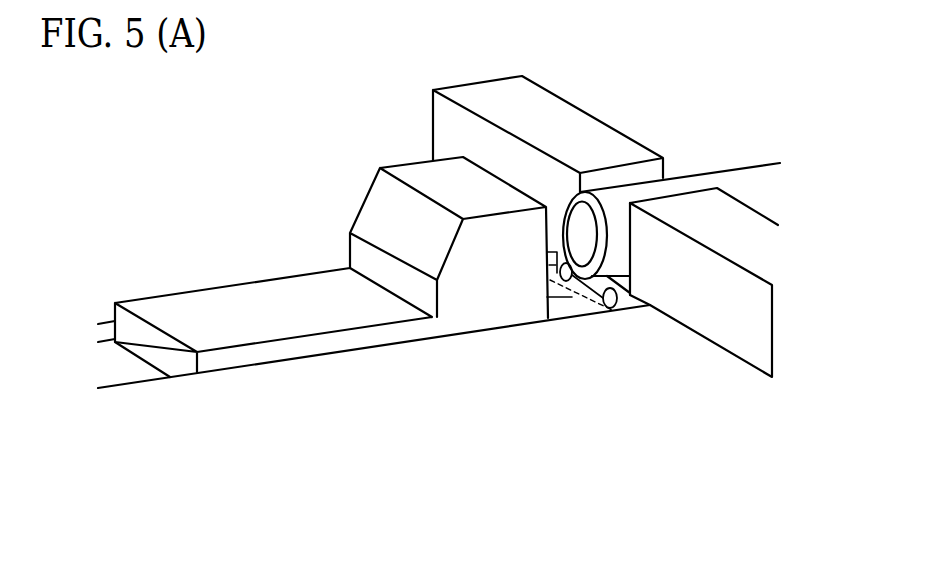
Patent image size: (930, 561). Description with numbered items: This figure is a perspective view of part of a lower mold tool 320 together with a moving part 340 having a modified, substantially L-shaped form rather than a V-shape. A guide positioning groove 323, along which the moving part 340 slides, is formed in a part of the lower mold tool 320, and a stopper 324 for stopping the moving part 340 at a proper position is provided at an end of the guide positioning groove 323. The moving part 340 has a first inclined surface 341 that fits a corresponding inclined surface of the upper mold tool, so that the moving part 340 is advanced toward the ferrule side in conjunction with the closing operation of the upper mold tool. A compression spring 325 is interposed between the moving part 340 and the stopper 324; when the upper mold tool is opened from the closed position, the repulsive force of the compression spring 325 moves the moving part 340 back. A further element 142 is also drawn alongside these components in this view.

The guide member 142 is at (743, 172).
The lower mold tool 320 is at (420, 390).
The guide positioning groove 323 is at (125, 372).
The stopper 324 is at (733, 330).
The compression spring 325 is at (562, 302).
The moving part 340 is at (255, 298).
The first inclined surface 341 is at (380, 215).